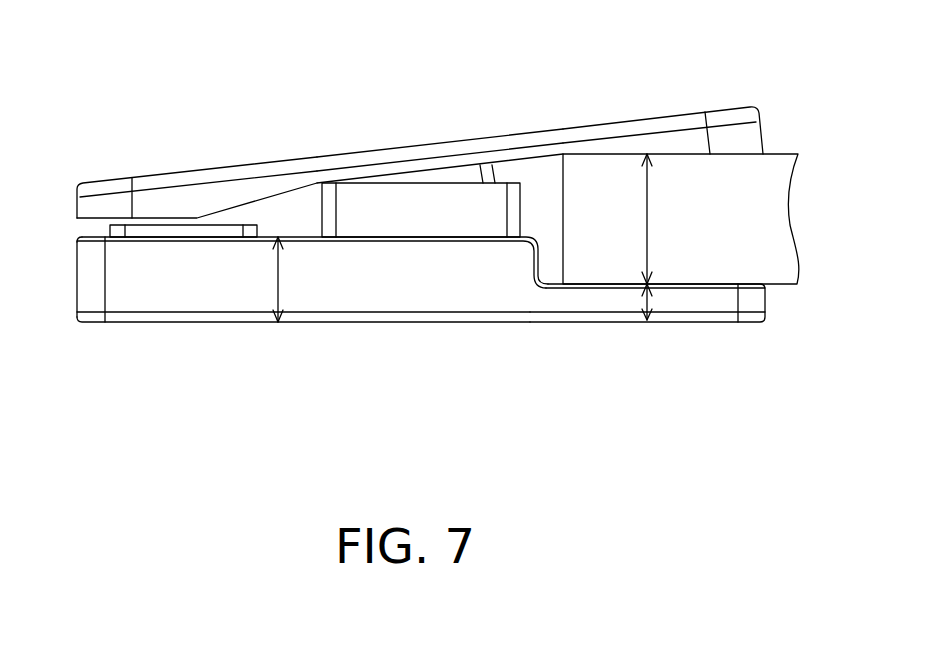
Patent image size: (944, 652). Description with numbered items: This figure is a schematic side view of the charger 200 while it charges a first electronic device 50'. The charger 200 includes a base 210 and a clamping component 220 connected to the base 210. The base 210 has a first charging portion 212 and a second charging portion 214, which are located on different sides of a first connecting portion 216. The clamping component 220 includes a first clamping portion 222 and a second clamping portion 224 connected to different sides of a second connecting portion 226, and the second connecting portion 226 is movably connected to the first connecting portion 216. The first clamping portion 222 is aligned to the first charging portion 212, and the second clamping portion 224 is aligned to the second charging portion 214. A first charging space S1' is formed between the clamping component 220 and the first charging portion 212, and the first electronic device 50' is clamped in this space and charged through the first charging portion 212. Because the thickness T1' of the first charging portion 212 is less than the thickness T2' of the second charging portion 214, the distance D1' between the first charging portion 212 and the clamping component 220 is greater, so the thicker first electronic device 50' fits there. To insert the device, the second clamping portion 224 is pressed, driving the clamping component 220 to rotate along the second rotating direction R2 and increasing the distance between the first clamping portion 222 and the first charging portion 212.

The charger 200 is at (828, 405).
The base 210 is at (547, 383).
The first charging portion 212 is at (595, 298).
The second charging portion 214 is at (232, 292).
The first connecting portion 216 is at (426, 210).
The clamping component 220 is at (528, 62).
The first clamping portion 222 is at (637, 145).
The second clamping portion 224 is at (192, 202).
The second connecting portion 226 is at (435, 177).
The first electronic device 50' is at (681, 148).
The first charging space S1' is at (682, 98).
The second rotating direction R2 is at (772, 82).
The distance between first charging portion and clamping component D1' is at (666, 219).
The thickness of first charging portion T1' is at (666, 334).
The thickness of second charging portion T2' is at (298, 279).